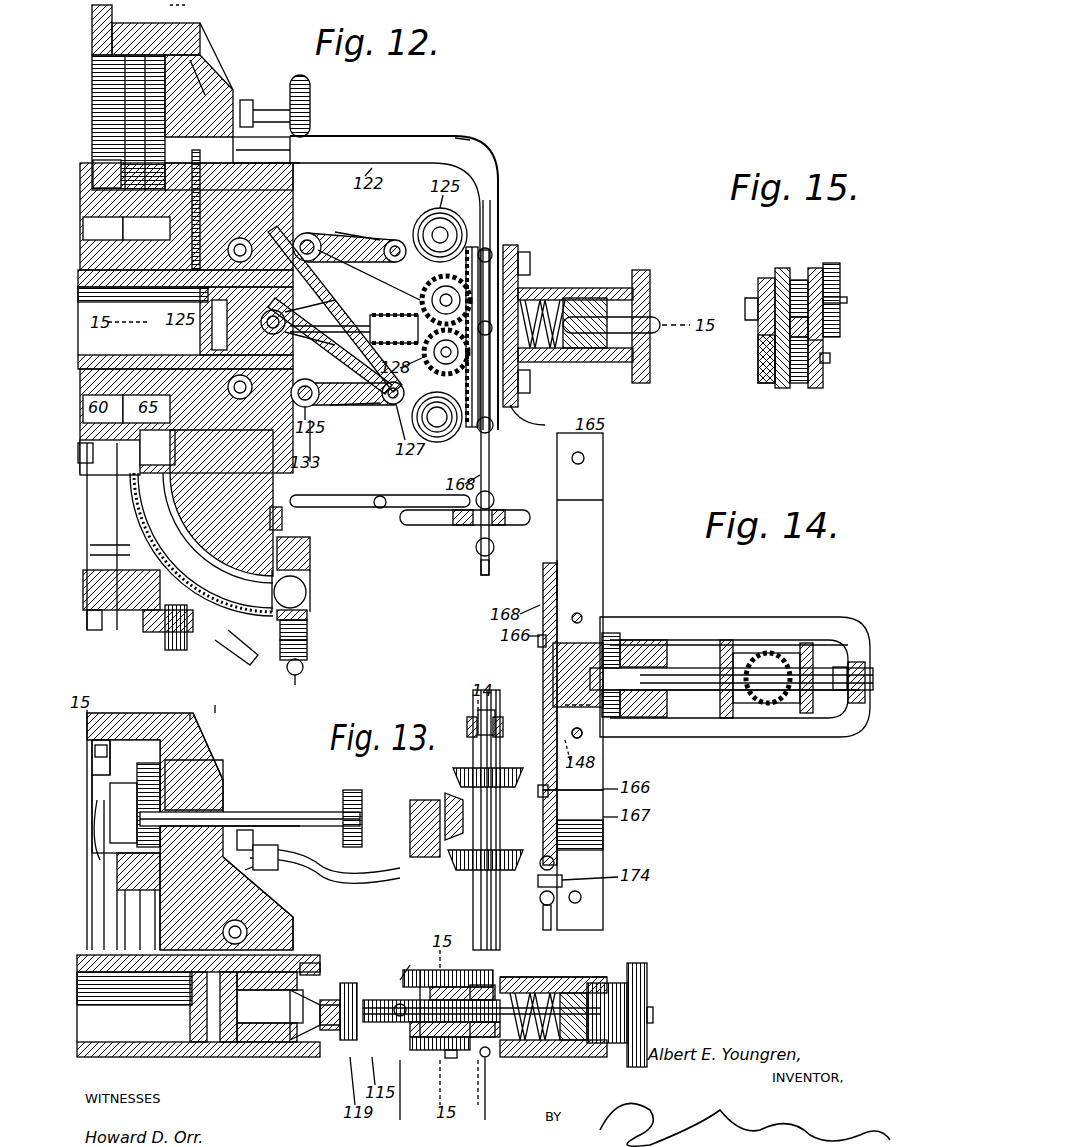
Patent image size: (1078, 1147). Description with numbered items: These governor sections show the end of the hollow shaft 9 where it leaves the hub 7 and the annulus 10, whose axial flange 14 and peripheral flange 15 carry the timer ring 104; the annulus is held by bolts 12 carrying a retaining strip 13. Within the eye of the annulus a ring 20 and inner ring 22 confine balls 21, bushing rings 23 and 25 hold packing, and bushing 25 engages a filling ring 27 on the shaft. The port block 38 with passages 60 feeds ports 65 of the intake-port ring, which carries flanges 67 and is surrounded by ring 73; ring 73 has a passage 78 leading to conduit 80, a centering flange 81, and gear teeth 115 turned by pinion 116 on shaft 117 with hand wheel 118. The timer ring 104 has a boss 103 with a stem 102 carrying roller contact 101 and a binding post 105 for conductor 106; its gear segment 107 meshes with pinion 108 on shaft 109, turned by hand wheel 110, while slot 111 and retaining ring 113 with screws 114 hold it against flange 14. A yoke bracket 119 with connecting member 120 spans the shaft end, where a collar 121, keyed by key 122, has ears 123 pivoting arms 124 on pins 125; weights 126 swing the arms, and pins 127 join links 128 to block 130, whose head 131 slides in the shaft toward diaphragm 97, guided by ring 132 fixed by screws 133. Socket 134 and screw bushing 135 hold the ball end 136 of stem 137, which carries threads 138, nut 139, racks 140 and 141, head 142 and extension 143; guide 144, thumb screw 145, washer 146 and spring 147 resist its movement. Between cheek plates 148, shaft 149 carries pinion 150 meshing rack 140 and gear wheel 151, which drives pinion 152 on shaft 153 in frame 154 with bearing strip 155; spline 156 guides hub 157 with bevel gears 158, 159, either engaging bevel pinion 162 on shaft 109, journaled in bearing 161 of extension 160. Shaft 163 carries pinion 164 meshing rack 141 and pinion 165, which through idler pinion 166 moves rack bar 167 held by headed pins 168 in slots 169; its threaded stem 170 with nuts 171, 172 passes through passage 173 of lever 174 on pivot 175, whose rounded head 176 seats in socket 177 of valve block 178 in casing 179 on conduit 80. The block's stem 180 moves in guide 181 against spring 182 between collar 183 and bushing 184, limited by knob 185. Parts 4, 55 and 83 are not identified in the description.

In FIG. 13, the frame 4 is at (220, 697).
In FIG. 12, the hub 7 is at (244, 636).
In FIG. 12, the hollow shaft 9 is at (85, 321).
In FIG. 13, the hollow shaft 9 is at (87, 1007).
In FIG. 12, the annulus 10 is at (220, 62).
In FIG. 13, the annulus 10 is at (205, 725).
In FIG. 12, the bolts 12 is at (180, 650).
In FIG. 12, the retaining strip 13 is at (155, 632).
In FIG. 12, the axially extending flange 14 is at (184, 9).
In FIG. 13, the axially extending flange 14 is at (483, 1091).
In FIG. 12, the peripheral flange 15 is at (92, 36).
In FIG. 12, the ring 20 is at (360, 148).
In FIG. 13, the ring 20 is at (207, 1057).
In FIG. 12, the balls 21 is at (315, 160).
In FIG. 13, the balls 21 is at (270, 860).
In FIG. 13, the ring 22 is at (257, 842).
In FIG. 13, the bushing ring 23 is at (278, 890).
In FIG. 12, the bushing ring 25 is at (300, 145).
In FIG. 13, the bushing ring 25 is at (220, 930).
In FIG. 12, the filling ring 27 is at (320, 148).
In FIG. 13, the filling ring 27 is at (165, 1008).
In FIG. 12, the port block 38 is at (88, 463).
In FIG. 12, the sleeve 55 is at (165, 317).
In FIG. 12, the passages 60 is at (103, 228).
In FIG. 12, the ports 65 is at (146, 228).
In FIG. 12, the flanges 67 is at (126, 505).
In FIG. 12, the ring 73 is at (225, 100).
In FIG. 13, the ring 73 is at (140, 920).
In FIG. 12, the port 78 is at (157, 447).
In FIG. 12, the conduit 80 is at (258, 570).
In FIG. 12, the radial peripheral flange 81 is at (240, 150).
In FIG. 13, the radial peripheral flange 81 is at (225, 818).
In FIG. 12, the hub 83 is at (172, 478).
In FIG. 13, the diaphragm 97 is at (190, 1028).
In FIG. 13, the contact 101 is at (87, 730).
In FIG. 13, the stem 102 is at (140, 720).
In FIG. 13, the boss 103 is at (205, 745).
In FIG. 12, the timer ring 104 is at (205, 38).
In FIG. 13, the timer ring 104 is at (215, 768).
In FIG. 13, the binding post 105 is at (126, 813).
In FIG. 13, the conductor 106 is at (107, 875).
In FIG. 13, the gear segment 107 is at (125, 870).
In FIG. 13, the pinion 108 is at (165, 790).
In FIG. 13, the shaft 109 is at (312, 812).
In FIG. 13, the hand wheel 110 is at (352, 790).
In FIG. 13, the elongated slot 111 is at (200, 700).
In FIG. 12, the retaining ring 113 is at (90, 630).
In FIG. 13, the retaining ring 113 is at (110, 725).
In FIG. 12, the screws 114 is at (105, 610).
In FIG. 13, the screws 114 is at (122, 712).
In FIG. 12, the gear teeth 115 is at (135, 150).
In FIG. 12, the pinion 116 is at (160, 28).
In FIG. 12, the shaft 117 is at (262, 108).
In FIG. 12, the hand wheel 118 is at (310, 98).
In FIG. 12, the bracket 119 is at (435, 136).
In FIG. 14, the bracket 119 is at (603, 490).
In FIG. 12, the connecting member 120 is at (500, 186).
In FIG. 14, the connecting member 120 is at (603, 552).
In FIG. 12, the collar 121 is at (387, 247).
In FIG. 12, the key 122 is at (300, 170).
In FIG. 13, the key 122 is at (290, 905).
In FIG. 12, the ears 123 is at (318, 410).
In FIG. 12, the arm 124 is at (360, 407).
In FIG. 12, the pivot pin 125 is at (312, 242).
In FIG. 12, the weight 126 is at (438, 442).
In FIG. 12, the pivot pin 127 is at (396, 244).
In FIG. 12, the link 128 is at (425, 290).
In FIG. 12, the block 130 is at (210, 325).
In FIG. 13, the block 130 is at (270, 1006).
In FIG. 12, the head 131 is at (165, 355).
In FIG. 13, the head 131 is at (225, 1057).
In FIG. 13, the ring 132 is at (268, 1057).
In FIG. 12, the screws 133 is at (303, 233).
In FIG. 13, the screws 133 is at (255, 1057).
In FIG. 12, the socket 134 is at (352, 345).
In FIG. 13, the socket 134 is at (322, 965).
In FIG. 12, the screw bushing 135 is at (385, 318).
In FIG. 13, the screw bushing 135 is at (335, 1045).
In FIG. 12, the ball end 136 is at (345, 280).
In FIG. 13, the ball end 136 is at (325, 1057).
In FIG. 12, the stem 137 is at (315, 335).
In FIG. 15, the stem 137 is at (824, 340).
In FIG. 13, the stem 137 is at (305, 1057).
In FIG. 12, the screw threads 138 is at (422, 345).
In FIG. 12, the nut 139 is at (400, 296).
In FIG. 13, the nut 139 is at (380, 965).
In FIG. 12, the rack 140 is at (447, 239).
In FIG. 14, the rack 140 is at (578, 613).
In FIG. 13, the rack 140 is at (410, 960).
In FIG. 12, the rack 141 is at (394, 329).
In FIG. 14, the rack 141 is at (575, 708).
In FIG. 13, the rack 141 is at (580, 722).
In FIG. 12, the head 142 is at (535, 365).
In FIG. 13, the head 142 is at (545, 977).
In FIG. 12, the stem extension 143 is at (665, 318).
In FIG. 13, the stem extension 143 is at (580, 978).
In FIG. 12, the guide 144 is at (600, 283).
In FIG. 12, the thumb screw 145 is at (650, 275).
In FIG. 13, the thumb screw 145 is at (647, 970).
In FIG. 12, the washer 146 is at (580, 365).
In FIG. 13, the washer 146 is at (560, 1053).
In FIG. 12, the spring 147 is at (560, 290).
In FIG. 13, the spring 147 is at (550, 1057).
In FIG. 12, the cheek plate extensions 148 is at (439, 417).
In FIG. 15, the cheek plate extensions 148 is at (782, 282).
In FIG. 14, the cheek plate extensions 148 is at (578, 740).
In FIG. 13, the cheek plate extensions 148 is at (403, 984).
In FIG. 15, the short shaft 149 is at (847, 300).
In FIG. 13, the short shaft 149 is at (380, 972).
In FIG. 12, the pinion 150 is at (495, 215).
In FIG. 15, the pinion 150 is at (840, 318).
In FIG. 13, the pinion 150 is at (410, 1050).
In FIG. 12, the gear wheel 151 is at (440, 235).
In FIG. 15, the gear wheel 151 is at (822, 278).
In FIG. 14, the gear wheel 151 is at (615, 633).
In FIG. 13, the gear wheel 151 is at (438, 970).
In FIG. 12, the pinion 152 is at (522, 395).
In FIG. 14, the pinion 152 is at (630, 717).
In FIG. 13, the pinion 152 is at (495, 985).
In FIG. 14, the shaft 153 is at (685, 670).
In FIG. 13, the shaft 153 is at (485, 900).
In FIG. 14, the frame 154 is at (708, 617).
In FIG. 13, the frame 154 is at (470, 717).
In FIG. 14, the bearing strip 155 is at (700, 691).
In FIG. 13, the bearing strip 155 is at (500, 955).
In FIG. 14, the spline 156 is at (790, 718).
In FIG. 13, the spline 156 is at (478, 752).
In FIG. 14, the elongated hub 157 is at (810, 718).
In FIG. 13, the elongated hub 157 is at (502, 828).
In FIG. 14, the bevel gear wheel 158 is at (735, 703).
In FIG. 13, the bevel gear wheel 158 is at (512, 870).
In FIG. 14, the bevel gear wheel 159 is at (812, 643).
In FIG. 13, the bevel gear wheel 159 is at (515, 770).
In FIG. 13, the lateral extension 160 is at (335, 878).
In FIG. 14, the journal bearing 161 is at (730, 640).
In FIG. 13, the journal bearing 161 is at (428, 800).
In FIG. 14, the bevel pinion 162 is at (790, 640).
In FIG. 13, the bevel pinion 162 is at (465, 820).
In FIG. 12, the short shaft 163 is at (494, 430).
In FIG. 15, the short shaft 163 is at (830, 358).
In FIG. 13, the short shaft 163 is at (545, 735).
In FIG. 15, the pinion 164 is at (800, 383).
In FIG. 12, the pinion 165 is at (540, 660).
In FIG. 15, the pinion 165 is at (762, 383).
In FIG. 12, the idler pinion 166 is at (440, 335).
In FIG. 15, the idler pinion 166 is at (763, 282).
In FIG. 13, the idler pinion 166 is at (452, 1058).
In FIG. 12, the rack bar 167 is at (478, 162).
In FIG. 13, the rack bar 167 is at (490, 1058).
In FIG. 12, the headed pins 168 is at (518, 250).
In FIG. 13, the headed pins 168 is at (507, 1097).
In FIG. 12, the slots 169 is at (490, 470).
In FIG. 12, the threaded stem 170 is at (488, 572).
In FIG. 13, the threaded stem 170 is at (603, 930).
In FIG. 12, the nut 171 is at (495, 500).
In FIG. 13, the nut 171 is at (555, 860).
In FIG. 12, the nut 172 is at (495, 550).
In FIG. 13, the nut 172 is at (555, 900).
In FIG. 12, the passage 173 is at (465, 525).
In FIG. 12, the lever 174 is at (425, 525).
In FIG. 13, the lever 174 is at (471, 1008).
In FIG. 12, the pivot support 175 is at (388, 500).
In FIG. 12, the rounded head 176 is at (325, 500).
In FIG. 12, the rounded socket 177 is at (312, 543).
In FIG. 12, the valve block 178 is at (312, 565).
In FIG. 12, the valve casing 179 is at (308, 614).
In FIG. 12, the guiding stem 180 is at (306, 590).
In FIG. 12, the guide 181 is at (308, 653).
In FIG. 12, the spring 182 is at (308, 633).
In FIG. 12, the collar 183 is at (312, 600).
In FIG. 12, the bushing 184 is at (303, 670).
In FIG. 12, the knob 185 is at (295, 688).